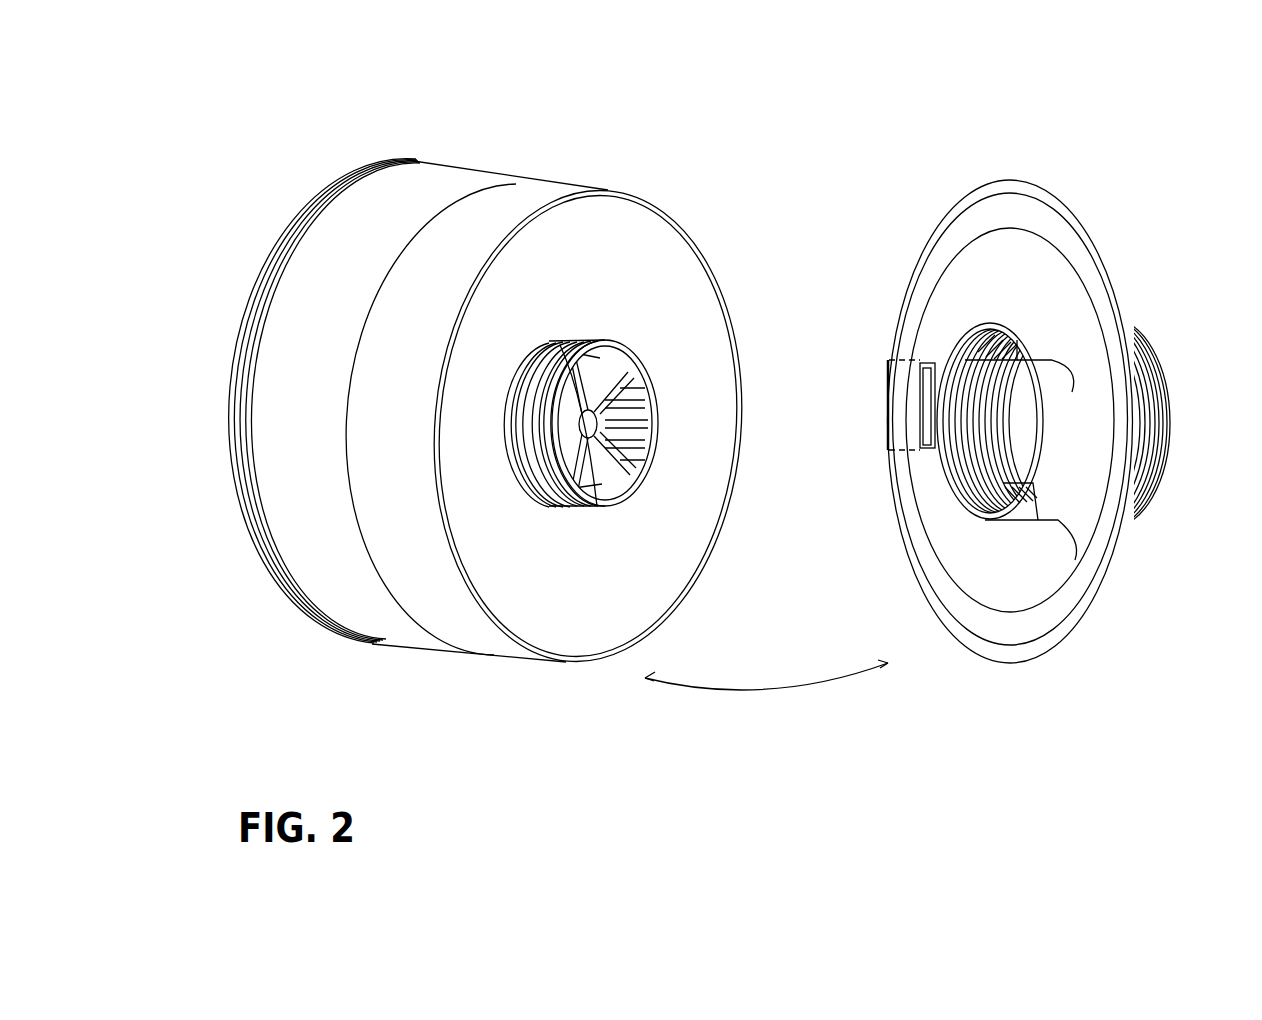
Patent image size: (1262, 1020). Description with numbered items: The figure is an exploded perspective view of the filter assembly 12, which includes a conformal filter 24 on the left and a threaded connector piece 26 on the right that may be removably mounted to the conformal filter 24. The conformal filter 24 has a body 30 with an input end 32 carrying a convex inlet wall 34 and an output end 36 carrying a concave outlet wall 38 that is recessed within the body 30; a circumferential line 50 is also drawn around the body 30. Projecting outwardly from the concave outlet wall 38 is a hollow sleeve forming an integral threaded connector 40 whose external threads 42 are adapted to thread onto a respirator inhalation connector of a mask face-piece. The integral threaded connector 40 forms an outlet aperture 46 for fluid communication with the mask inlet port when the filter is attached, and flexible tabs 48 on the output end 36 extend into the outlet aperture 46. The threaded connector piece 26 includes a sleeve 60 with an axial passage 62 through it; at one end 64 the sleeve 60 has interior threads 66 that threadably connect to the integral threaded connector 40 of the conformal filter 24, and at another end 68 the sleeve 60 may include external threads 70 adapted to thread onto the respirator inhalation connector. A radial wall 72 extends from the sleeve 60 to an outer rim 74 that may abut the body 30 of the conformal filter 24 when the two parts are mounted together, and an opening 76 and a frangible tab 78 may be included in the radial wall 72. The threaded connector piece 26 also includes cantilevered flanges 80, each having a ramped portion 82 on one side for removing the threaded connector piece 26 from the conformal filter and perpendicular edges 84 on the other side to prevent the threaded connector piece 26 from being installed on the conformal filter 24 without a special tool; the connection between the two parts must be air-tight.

The filter assembly 12 is at (507, 55).
The conformal filter 24 is at (490, 442).
The threaded connector piece 26 is at (1040, 176).
The body 30 is at (487, 654).
The input end 32 is at (232, 492).
The convex inlet wall 34 is at (248, 536).
The output end 36 is at (708, 542).
The concave outlet wall 38 is at (650, 573).
The integral threaded connector 40 is at (618, 332).
The external threads 42 is at (562, 345).
The outlet aperture 46 is at (650, 410).
The flexible tabs 48 is at (658, 433).
The seam 50 is at (368, 615).
The sleeve 60 is at (1058, 355).
The axial passage 62 is at (1010, 416).
The one end 64 is at (972, 512).
The interior threads 66 is at (962, 500).
The another end 68 is at (1150, 440).
The external threads 70 is at (1160, 422).
The radial wall 72 is at (1090, 512).
The outer rim 74 is at (1120, 523).
The opening 76 is at (930, 383).
The frangible tab 78 is at (889, 377).
The cantilevered flanges 80 is at (975, 355).
The ramped portion 82 is at (1003, 330).
The perpendicular edges 84 is at (957, 380).